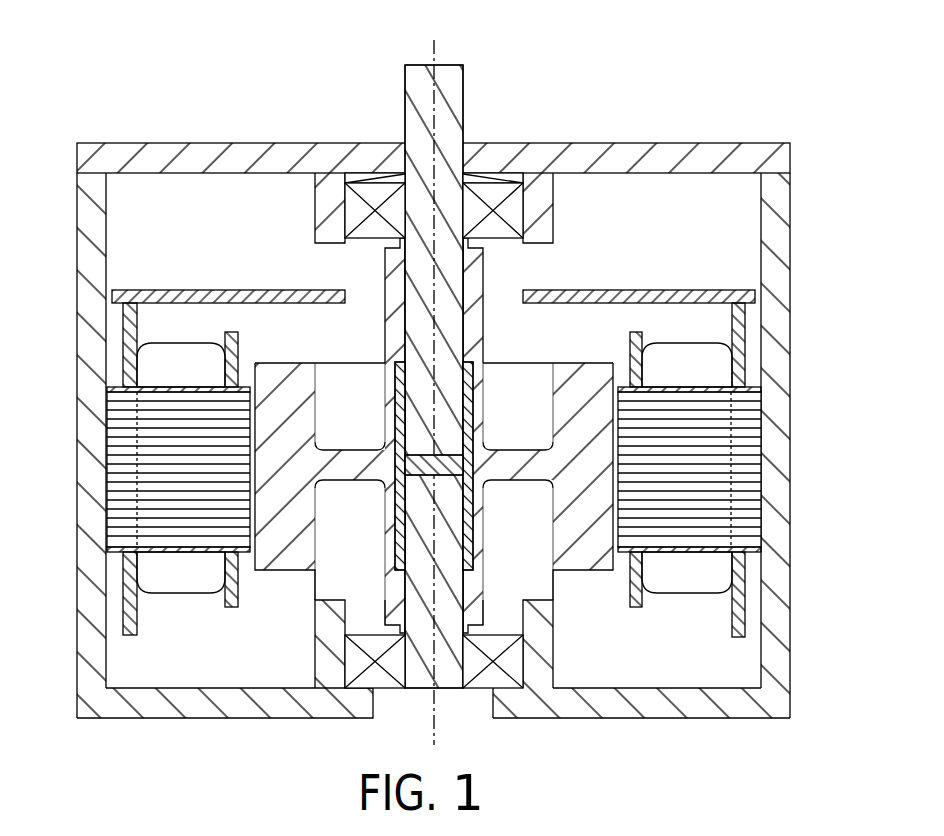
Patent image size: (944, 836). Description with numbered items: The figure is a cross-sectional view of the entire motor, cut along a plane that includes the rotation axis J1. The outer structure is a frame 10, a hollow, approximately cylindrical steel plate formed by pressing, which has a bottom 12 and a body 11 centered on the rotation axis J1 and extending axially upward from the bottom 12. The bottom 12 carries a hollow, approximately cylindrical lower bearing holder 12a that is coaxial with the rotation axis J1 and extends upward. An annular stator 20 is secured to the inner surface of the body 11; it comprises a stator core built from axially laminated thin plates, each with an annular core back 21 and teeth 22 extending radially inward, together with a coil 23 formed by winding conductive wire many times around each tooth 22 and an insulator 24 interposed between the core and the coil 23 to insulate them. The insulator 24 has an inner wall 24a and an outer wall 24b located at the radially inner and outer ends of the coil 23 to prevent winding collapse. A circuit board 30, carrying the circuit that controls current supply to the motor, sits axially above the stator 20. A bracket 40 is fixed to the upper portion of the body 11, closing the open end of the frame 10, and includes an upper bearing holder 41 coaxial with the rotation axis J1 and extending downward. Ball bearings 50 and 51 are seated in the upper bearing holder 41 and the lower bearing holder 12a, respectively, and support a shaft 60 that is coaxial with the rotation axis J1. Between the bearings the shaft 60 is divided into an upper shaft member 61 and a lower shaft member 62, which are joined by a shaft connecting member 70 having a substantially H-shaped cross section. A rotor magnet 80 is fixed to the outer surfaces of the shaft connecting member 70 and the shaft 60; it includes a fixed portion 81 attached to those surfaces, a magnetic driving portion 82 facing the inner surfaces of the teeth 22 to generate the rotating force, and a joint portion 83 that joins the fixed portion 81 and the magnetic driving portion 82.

The frame 10 is at (68, 373).
The body 11 is at (95, 307).
The bottom 12 is at (200, 705).
The lower bearing holder 12a is at (332, 673).
The stator 20 is at (491, 479).
The core back 21 is at (747, 515).
The teeth 22 is at (693, 468).
The coil 23 is at (688, 585).
The insulator 24 is at (491, 474).
The inner wall 24a is at (630, 595).
The outer wall 24b is at (745, 610).
The circuit board 30 is at (705, 292).
The bracket 40 is at (667, 128).
The upper bearing holder 41 is at (535, 172).
The ball bearing 50 is at (375, 187).
The ball bearing 51 is at (483, 678).
The shaft 60 is at (391, 98).
The upper shaft member 61 is at (448, 135).
The lower shaft member 62 is at (420, 672).
The shaft connecting member 70 is at (479, 452).
The rotor magnet 80 is at (332, 350).
The fixed portion 81 is at (385, 292).
The magnetic driving portion 82 is at (268, 362).
The joint portion 83 is at (363, 477).
The rotation axis J1 is at (437, 50).